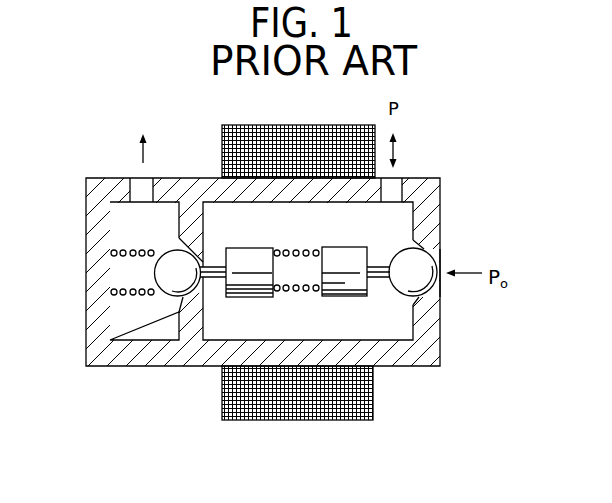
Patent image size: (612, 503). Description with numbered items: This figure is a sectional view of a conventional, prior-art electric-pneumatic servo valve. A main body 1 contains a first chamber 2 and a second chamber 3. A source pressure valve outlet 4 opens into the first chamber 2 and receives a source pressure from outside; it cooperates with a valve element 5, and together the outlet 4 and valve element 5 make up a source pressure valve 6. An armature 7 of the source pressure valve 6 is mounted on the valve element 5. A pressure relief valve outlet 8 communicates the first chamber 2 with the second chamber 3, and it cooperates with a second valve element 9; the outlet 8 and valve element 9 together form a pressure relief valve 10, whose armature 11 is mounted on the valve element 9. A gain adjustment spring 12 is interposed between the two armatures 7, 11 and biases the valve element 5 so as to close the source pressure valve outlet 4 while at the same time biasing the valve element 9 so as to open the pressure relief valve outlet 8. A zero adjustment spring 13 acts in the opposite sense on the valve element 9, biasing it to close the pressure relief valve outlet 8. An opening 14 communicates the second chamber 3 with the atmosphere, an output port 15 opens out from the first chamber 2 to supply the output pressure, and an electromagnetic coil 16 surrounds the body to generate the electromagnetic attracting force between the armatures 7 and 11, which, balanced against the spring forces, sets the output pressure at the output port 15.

The main body 1 is at (92, 180).
The first chamber 2 is at (402, 222).
The second chamber 3 is at (125, 323).
The source pressure valve outlet 4 is at (438, 277).
The valve element 5 is at (428, 295).
The source pressure valve 6 is at (448, 256).
The armature 7 is at (358, 288).
The pressure relief valve outlet 8 is at (183, 248).
The valve element 9 is at (157, 271).
The pressure relief valve 10 is at (163, 306).
The armature 11 is at (237, 290).
The gain adjustment spring 12 is at (297, 291).
The zero adjustment spring 13 is at (115, 289).
The opening 14 is at (140, 188).
The output port 15 is at (398, 183).
The electromagnetic coil 16 is at (368, 407).